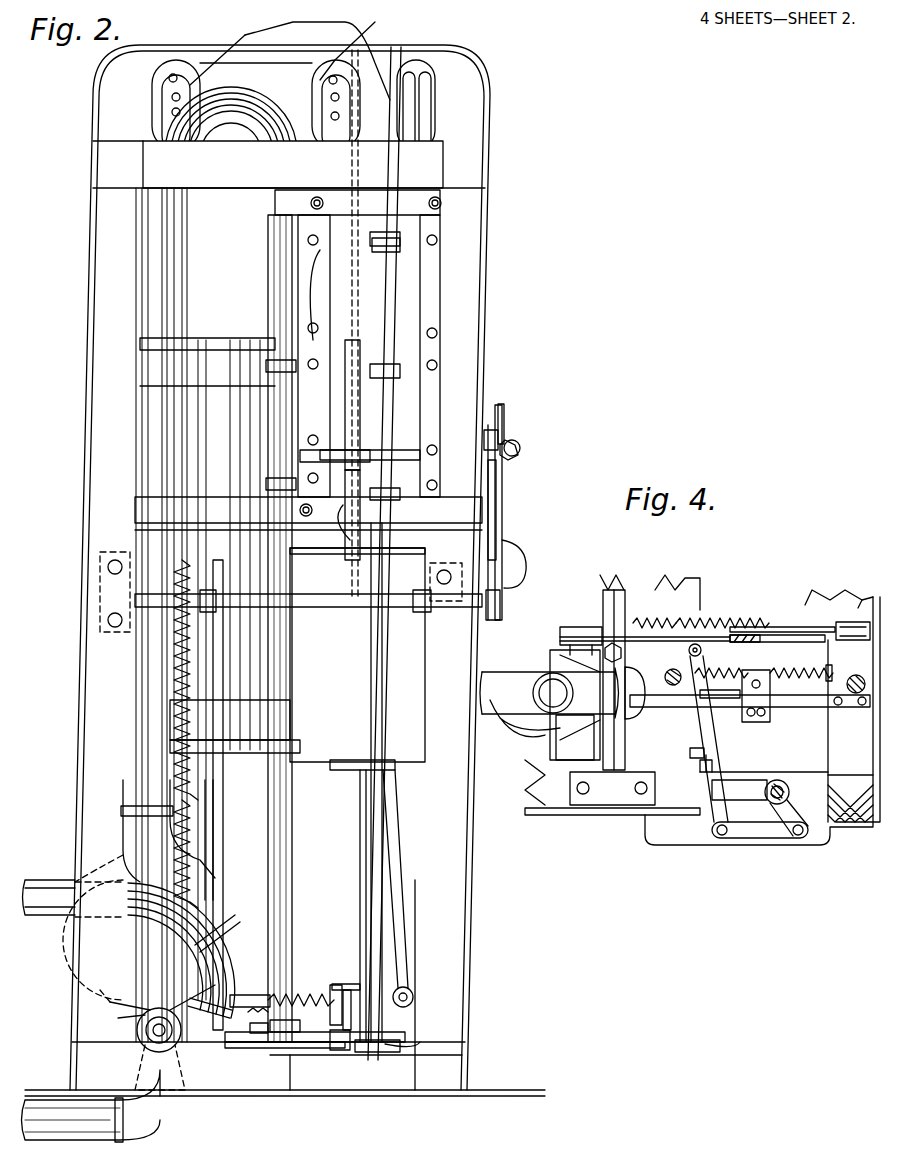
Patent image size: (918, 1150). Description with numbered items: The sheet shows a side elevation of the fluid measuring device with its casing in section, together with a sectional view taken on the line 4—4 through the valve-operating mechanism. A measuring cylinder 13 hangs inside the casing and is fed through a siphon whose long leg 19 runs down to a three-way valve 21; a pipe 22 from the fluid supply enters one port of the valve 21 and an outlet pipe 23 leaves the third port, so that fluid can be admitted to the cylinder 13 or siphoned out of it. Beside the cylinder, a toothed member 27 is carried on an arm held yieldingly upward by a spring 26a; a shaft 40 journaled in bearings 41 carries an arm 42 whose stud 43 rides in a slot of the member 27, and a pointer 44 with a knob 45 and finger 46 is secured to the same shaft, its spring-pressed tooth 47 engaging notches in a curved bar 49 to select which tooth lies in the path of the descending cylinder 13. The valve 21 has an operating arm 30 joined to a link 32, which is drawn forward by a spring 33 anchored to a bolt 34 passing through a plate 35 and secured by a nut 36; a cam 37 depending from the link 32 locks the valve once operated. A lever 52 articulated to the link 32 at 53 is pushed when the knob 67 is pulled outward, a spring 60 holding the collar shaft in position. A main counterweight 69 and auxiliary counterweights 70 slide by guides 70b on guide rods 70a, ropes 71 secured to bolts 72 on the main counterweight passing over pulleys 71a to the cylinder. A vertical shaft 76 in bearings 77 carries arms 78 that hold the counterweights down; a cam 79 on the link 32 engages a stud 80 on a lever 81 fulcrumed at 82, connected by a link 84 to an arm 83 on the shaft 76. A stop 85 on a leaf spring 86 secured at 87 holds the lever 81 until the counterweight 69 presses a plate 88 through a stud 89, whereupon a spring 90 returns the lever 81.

In FIG. 2, the section line 4— 4 is at (60, 748).
In FIG. 2, the measuring cylinder 13 is at (308, 555).
In FIG. 2, the long leg of siphon 19 is at (140, 757).
In FIG. 4, the long leg of siphon 19 is at (548, 672).
In FIG. 2, the three-way valve 21 is at (172, 1040).
In FIG. 2, the pipe 22 is at (184, 950).
In FIG. 2, the outlet pipe 23 is at (160, 1118).
In FIG. 2, the spring 26a is at (192, 850).
In FIG. 2, the member 27 is at (214, 800).
In FIG. 4, the operating arm 30 is at (598, 634).
In FIG. 2, the link 32 is at (300, 992).
In FIG. 4, the link 32 is at (654, 608).
In FIG. 2, the spring 33 is at (300, 1048).
In FIG. 4, the spring 33 is at (722, 610).
In FIG. 4, the bolt 34 is at (800, 627).
In FIG. 4, the plate 35 is at (845, 612).
In FIG. 4, the nut 36 is at (854, 621).
In FIG. 2, the cam 37 is at (250, 1012).
In FIG. 2, the shaft 40 is at (322, 607).
In FIG. 2, the bearings 41 is at (200, 598).
In FIG. 2, the arm 42 is at (222, 648).
In FIG. 2, the stud 43 is at (224, 735).
In FIG. 2, the pointer 44 is at (496, 600).
In FIG. 2, the knob 45 is at (518, 452).
In FIG. 2, the finger 46 is at (502, 420).
In FIG. 2, the spring-pressed tooth 47 is at (496, 525).
In FIG. 2, the curved bar 49 is at (484, 440).
In FIG. 2, the lever 52 is at (395, 935).
In FIG. 4, the lever 52 is at (750, 635).
In FIG. 2, the articulation point 53 is at (413, 995).
In FIG. 4, the spring 60 is at (690, 652).
In FIG. 2, the knob 67 is at (512, 560).
In FIG. 2, the main counterweight 69 is at (357, 655).
In FIG. 2, the auxiliary counterweights 70 is at (333, 366).
In FIG. 2, the guide rods 70a is at (296, 862).
In FIG. 4, the guide rods 70a is at (856, 671).
In FIG. 2, the guides 70b is at (272, 238).
In FIG. 2, the ropes 71 is at (350, 345).
In FIG. 2, the pulleys 71a is at (290, 55).
In FIG. 2, the bolts 72 is at (350, 548).
In FIG. 2, the vertical shaft 76 is at (382, 674).
In FIG. 4, the vertical shaft 76 is at (780, 780).
In FIG. 2, the bearings 77 is at (393, 190).
In FIG. 2, the arms 78 is at (385, 238).
In FIG. 4, the arms 78 is at (665, 674).
In FIG. 2, the cam 79 is at (332, 1000).
In FIG. 4, the cam 79 is at (742, 658).
In FIG. 2, the stud 80 is at (268, 995).
In FIG. 2, the lever 81 is at (265, 1042).
In FIG. 4, the lever 81 is at (704, 765).
In FIG. 2, the fulcrum 82 is at (285, 1020).
In FIG. 4, the fulcrum 82 is at (702, 737).
In FIG. 2, the arm 83 is at (420, 1043).
In FIG. 4, the arm 83 is at (794, 815).
In FIG. 2, the link 84 is at (375, 1052).
In FIG. 4, the link 84 is at (748, 838).
In FIG. 4, the stop 85 is at (715, 698).
In FIG. 4, the leaf spring 86 is at (750, 699).
In FIG. 4, the securing point 87 is at (858, 706).
In FIG. 2, the plate 88 is at (346, 994).
In FIG. 4, the plate 88 is at (756, 698).
In FIG. 2, the stud 89 is at (342, 1050).
In FIG. 4, the spring 90 is at (801, 665).